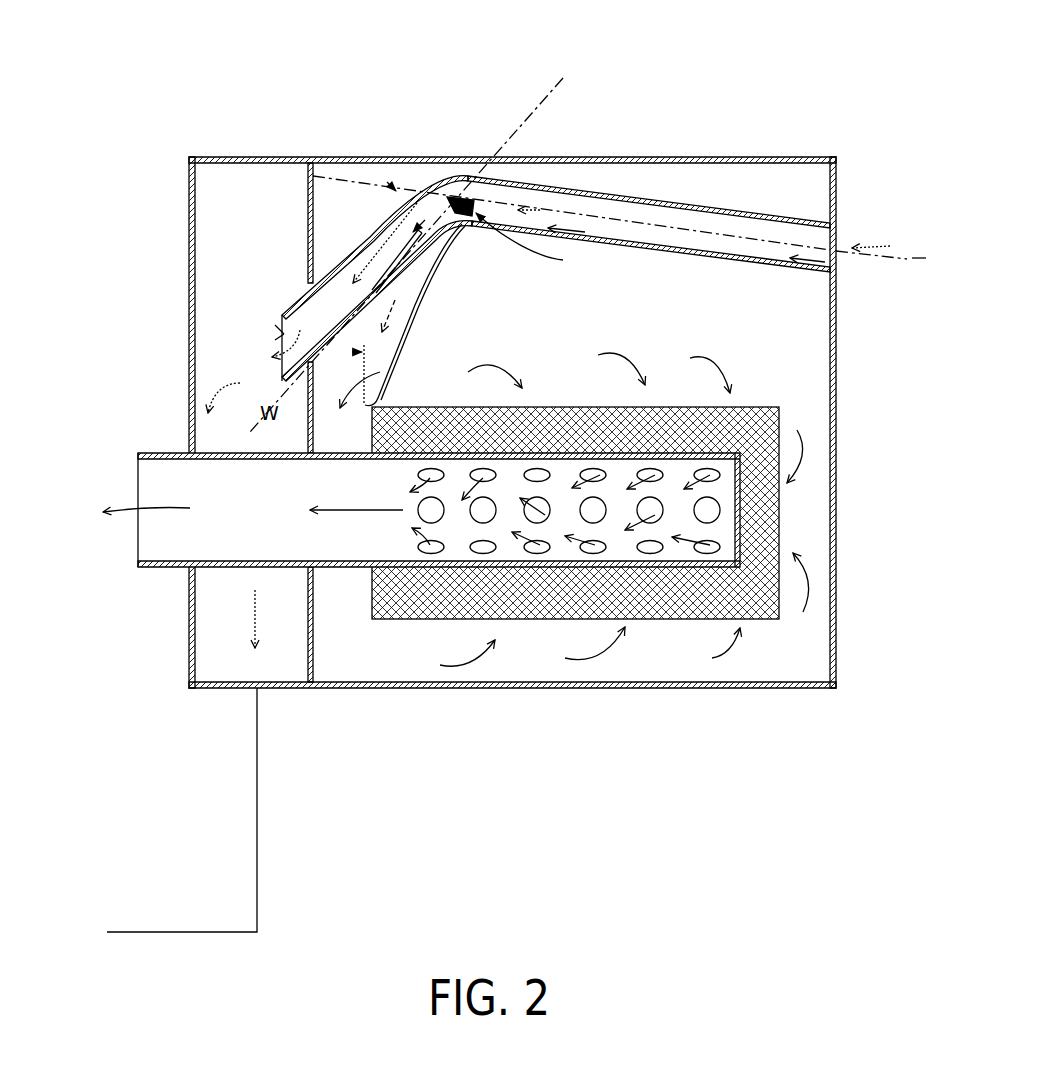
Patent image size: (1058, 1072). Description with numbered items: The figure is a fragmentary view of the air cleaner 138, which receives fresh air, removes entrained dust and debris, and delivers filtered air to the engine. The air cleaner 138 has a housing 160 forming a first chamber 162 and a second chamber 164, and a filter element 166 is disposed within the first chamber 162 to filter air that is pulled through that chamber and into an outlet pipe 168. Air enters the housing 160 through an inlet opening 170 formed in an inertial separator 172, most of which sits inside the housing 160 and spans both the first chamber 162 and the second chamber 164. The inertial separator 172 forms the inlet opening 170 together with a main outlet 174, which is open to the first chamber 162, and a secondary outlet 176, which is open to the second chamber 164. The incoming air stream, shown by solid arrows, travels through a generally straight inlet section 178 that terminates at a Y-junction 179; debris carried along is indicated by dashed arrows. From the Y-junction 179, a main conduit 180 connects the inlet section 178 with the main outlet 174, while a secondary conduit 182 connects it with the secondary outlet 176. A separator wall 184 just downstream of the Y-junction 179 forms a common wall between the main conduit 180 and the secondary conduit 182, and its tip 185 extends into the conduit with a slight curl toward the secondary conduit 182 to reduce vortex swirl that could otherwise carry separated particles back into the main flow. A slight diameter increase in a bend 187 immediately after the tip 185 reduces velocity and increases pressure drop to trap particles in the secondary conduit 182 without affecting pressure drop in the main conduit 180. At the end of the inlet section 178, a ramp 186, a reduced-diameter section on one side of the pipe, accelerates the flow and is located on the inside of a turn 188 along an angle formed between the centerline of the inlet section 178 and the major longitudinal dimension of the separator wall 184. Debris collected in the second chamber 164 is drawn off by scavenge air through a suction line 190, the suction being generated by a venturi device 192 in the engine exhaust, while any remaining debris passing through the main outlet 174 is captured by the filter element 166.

The air cleaner 138 is at (720, 52).
The housing 160 is at (634, 157).
The first chamber 162 is at (815, 180).
The second chamber 164 is at (255, 173).
The filter element 166 is at (753, 543).
The outlet pipe 168 is at (162, 568).
The inlet opening 170 is at (852, 263).
The inertial separator 172 is at (737, 215).
The main outlet 174 is at (382, 372).
The secondary outlet 176 is at (280, 333).
The inlet section 178 is at (667, 268).
The Y-junction 179 is at (478, 226).
The main conduit 180 is at (410, 310).
The secondary conduit 182 is at (298, 302).
The separator wall 184 is at (392, 180).
The tip 185 is at (455, 198).
The ramp 186 is at (512, 207).
The bend 187 is at (378, 240).
The turn 188 is at (387, 90).
The scavenge air line 190 is at (258, 765).
The venturi device 192 is at (160, 450).